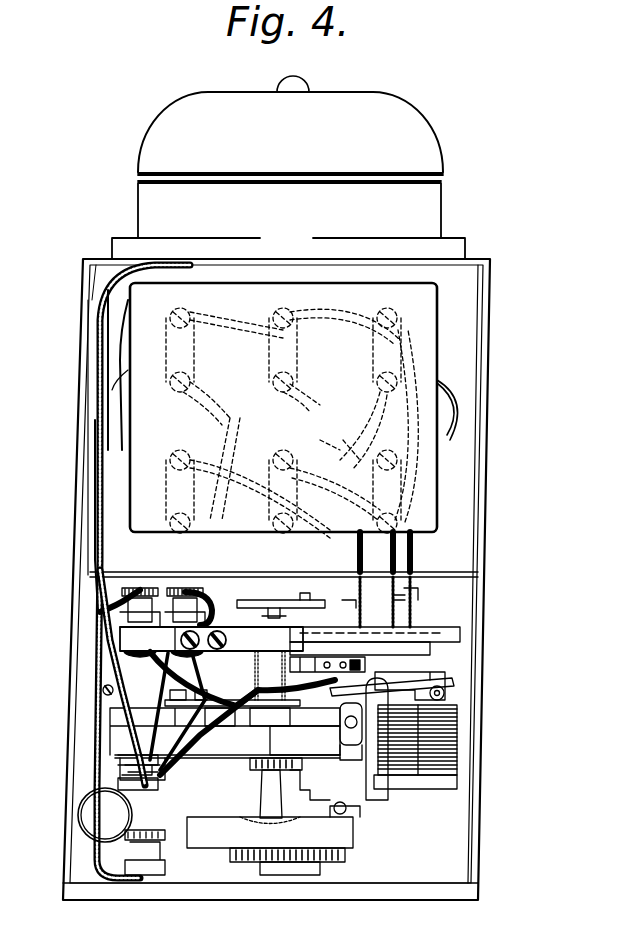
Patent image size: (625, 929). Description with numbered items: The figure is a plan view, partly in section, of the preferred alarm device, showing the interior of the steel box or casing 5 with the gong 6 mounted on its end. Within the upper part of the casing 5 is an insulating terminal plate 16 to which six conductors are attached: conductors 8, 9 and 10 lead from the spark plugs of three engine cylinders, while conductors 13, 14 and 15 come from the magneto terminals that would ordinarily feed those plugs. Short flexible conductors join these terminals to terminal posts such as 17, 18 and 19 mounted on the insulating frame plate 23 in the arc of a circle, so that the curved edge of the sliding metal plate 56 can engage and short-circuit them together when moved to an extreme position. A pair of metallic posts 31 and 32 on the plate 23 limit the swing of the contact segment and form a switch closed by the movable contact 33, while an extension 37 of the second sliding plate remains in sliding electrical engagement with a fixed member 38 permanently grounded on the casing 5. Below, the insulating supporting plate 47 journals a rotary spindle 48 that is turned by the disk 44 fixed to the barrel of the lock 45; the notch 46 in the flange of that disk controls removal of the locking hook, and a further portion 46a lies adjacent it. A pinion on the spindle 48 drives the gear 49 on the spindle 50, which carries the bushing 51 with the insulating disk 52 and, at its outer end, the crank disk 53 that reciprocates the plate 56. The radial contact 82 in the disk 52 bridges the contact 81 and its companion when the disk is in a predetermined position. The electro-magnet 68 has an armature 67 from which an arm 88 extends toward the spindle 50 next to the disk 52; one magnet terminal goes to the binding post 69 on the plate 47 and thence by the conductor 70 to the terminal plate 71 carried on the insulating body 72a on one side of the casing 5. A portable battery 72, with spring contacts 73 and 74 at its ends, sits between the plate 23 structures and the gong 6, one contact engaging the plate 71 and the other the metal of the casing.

The gong 6 is at (290, 124).
The battery 72 is at (437, 316).
The body of insulating material 72a is at (95, 450).
The spring contact 73 is at (130, 360).
The spring contact 74 is at (462, 400).
The terminal plate 71 is at (95, 534).
The box or casing 5 is at (92, 585).
The conductor 70 is at (95, 610).
The conductor 15 is at (338, 325).
The conductor 14 is at (318, 384).
The conductor 13 is at (222, 455).
The conductor 8 is at (366, 412).
The conductor 9 is at (360, 445).
The conductor 10 is at (310, 455).
The insulating terminal plate 16 is at (470, 535).
The metal plate 56 is at (375, 583).
The terminal post 18 is at (415, 580).
The terminal post 19 is at (418, 595).
The terminal post 17 is at (341, 598).
The crank disk 53 is at (272, 600).
The circular plate of insulating material 52 is at (305, 590).
The spindle 50 is at (262, 612).
The frame plate 23 is at (211, 642).
The metallic post or contact 32 is at (211, 642).
The fixed member 38 is at (257, 665).
The metallic post or contact 31 is at (287, 665).
The extension 37 is at (452, 628).
The movable contact 33 is at (370, 657).
The arm 88 is at (456, 680).
The armature 67 is at (448, 691).
The electro-magnet 68 is at (450, 760).
The circular plate or bushing 51 is at (330, 732).
The supporting plate 47 is at (195, 760).
The gear 49 is at (262, 760).
The rotary spindle 48 is at (271, 794).
The arm 46a is at (262, 784).
The notch 46 is at (197, 835).
The disk 44 is at (337, 822).
The lock 45 is at (320, 868).
The radially extending contact 82 is at (178, 688).
The contact 81 is at (199, 691).
The binding post 69 is at (150, 790).